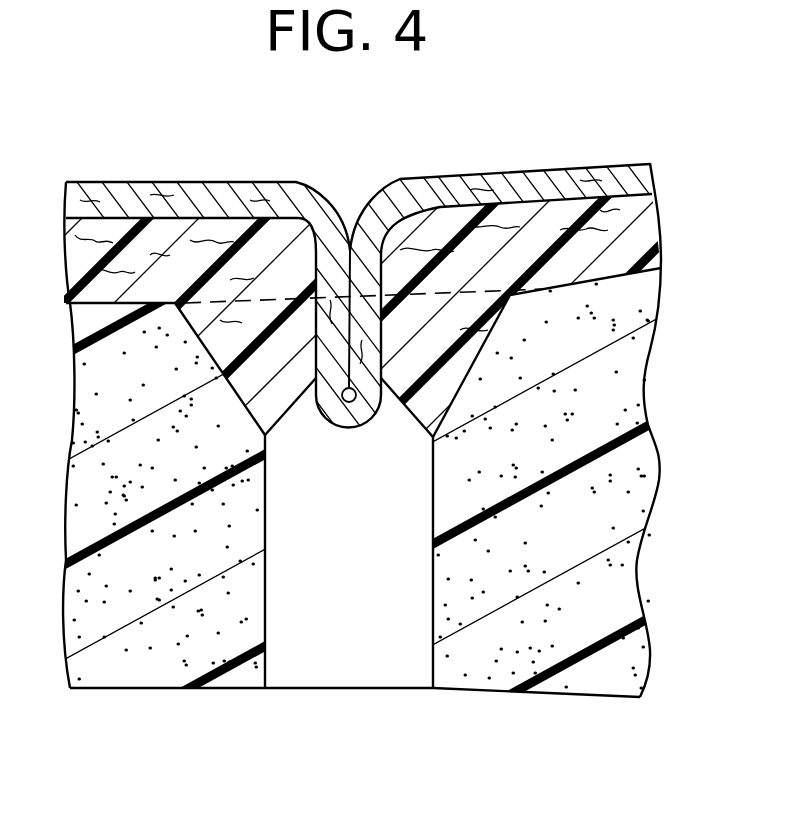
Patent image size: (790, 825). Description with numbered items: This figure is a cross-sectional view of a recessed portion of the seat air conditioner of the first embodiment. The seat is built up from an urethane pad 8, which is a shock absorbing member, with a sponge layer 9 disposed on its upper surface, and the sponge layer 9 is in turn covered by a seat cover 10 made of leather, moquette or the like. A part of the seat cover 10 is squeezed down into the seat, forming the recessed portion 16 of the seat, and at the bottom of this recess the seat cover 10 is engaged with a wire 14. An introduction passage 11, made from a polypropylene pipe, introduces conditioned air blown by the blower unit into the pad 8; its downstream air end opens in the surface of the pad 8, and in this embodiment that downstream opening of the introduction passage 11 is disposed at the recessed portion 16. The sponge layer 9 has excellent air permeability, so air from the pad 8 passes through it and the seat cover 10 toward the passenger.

The urethane pad 8 is at (155, 660).
The sponge layer 9 is at (137, 222).
The seat cover 10 is at (202, 200).
The introduction passage 11 is at (342, 663).
The wire 14 is at (352, 402).
The recessed portion 16 is at (369, 158).